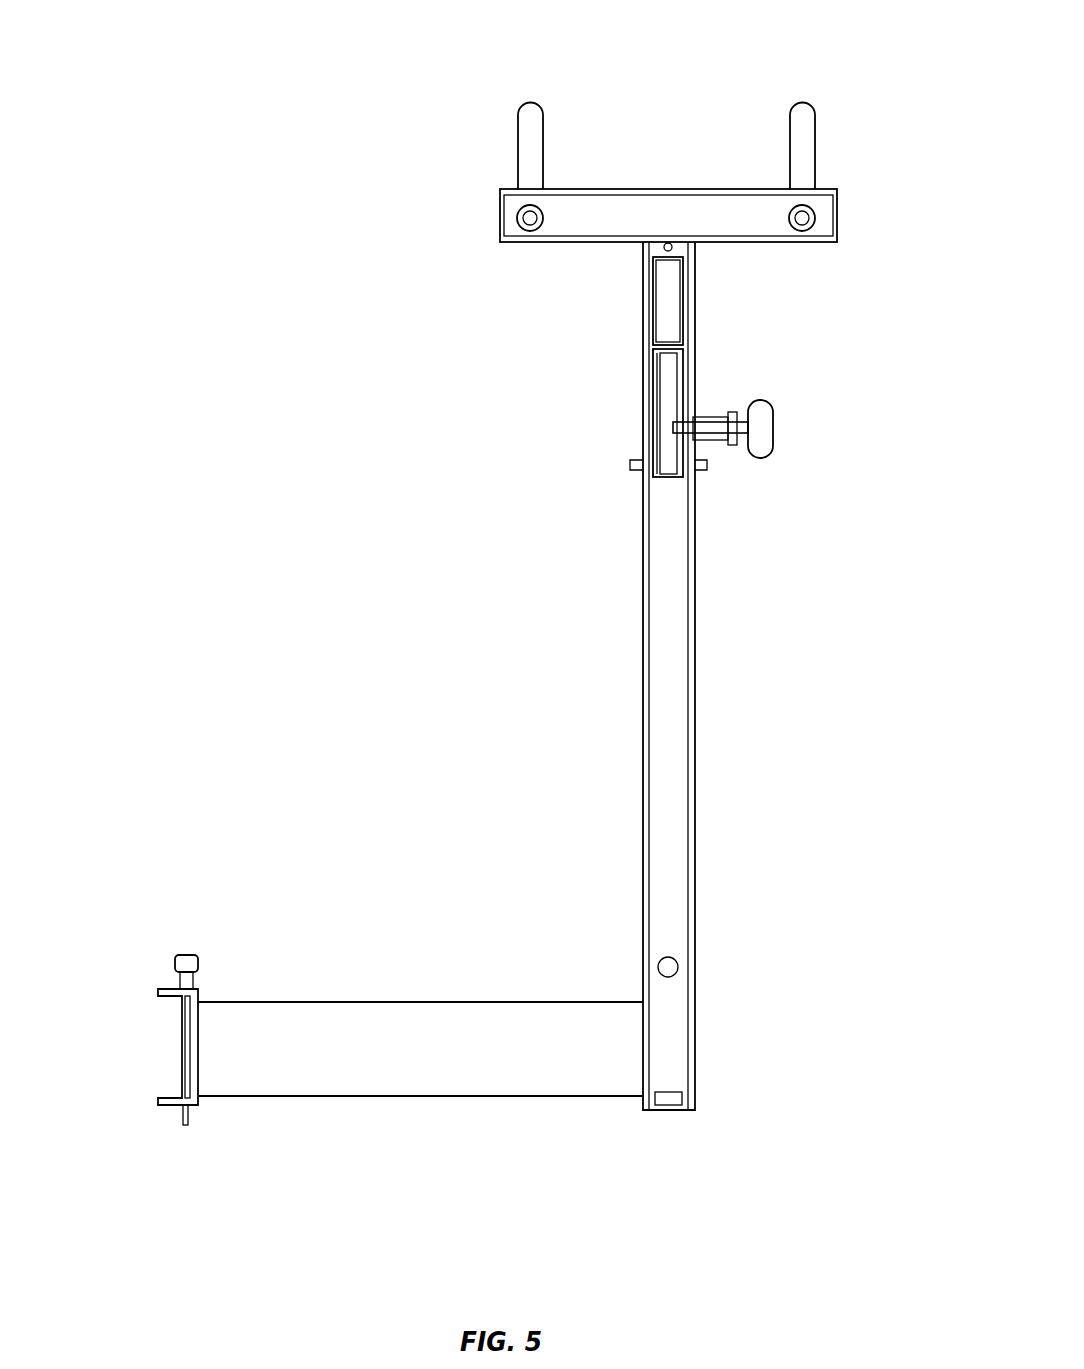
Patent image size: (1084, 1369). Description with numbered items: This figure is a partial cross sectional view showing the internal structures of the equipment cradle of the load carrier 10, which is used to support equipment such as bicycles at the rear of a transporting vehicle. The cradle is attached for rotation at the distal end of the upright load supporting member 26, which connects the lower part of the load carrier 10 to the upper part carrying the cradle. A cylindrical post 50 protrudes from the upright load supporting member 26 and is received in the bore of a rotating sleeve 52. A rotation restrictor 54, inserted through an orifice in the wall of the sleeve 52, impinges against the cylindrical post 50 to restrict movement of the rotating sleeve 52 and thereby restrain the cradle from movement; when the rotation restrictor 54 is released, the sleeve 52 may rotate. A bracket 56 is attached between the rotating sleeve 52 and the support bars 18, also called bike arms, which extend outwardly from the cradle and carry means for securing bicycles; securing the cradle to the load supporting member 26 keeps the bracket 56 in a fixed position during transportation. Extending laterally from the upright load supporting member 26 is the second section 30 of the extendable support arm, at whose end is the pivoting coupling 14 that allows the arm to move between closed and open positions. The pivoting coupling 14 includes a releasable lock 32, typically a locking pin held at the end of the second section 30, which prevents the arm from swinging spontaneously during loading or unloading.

The load carrier 10 is at (360, 748).
The pivoting coupling 14 is at (182, 1037).
The support bars 18 is at (800, 113).
The upright load supporting member 26 is at (667, 767).
The second section 30 is at (440, 1082).
The releasable lock 32 is at (187, 962).
The cylindrical post 50 is at (672, 310).
The rotating sleeve 52 is at (655, 403).
The rotation restrictor 54 is at (762, 428).
The bracket 56 is at (823, 218).